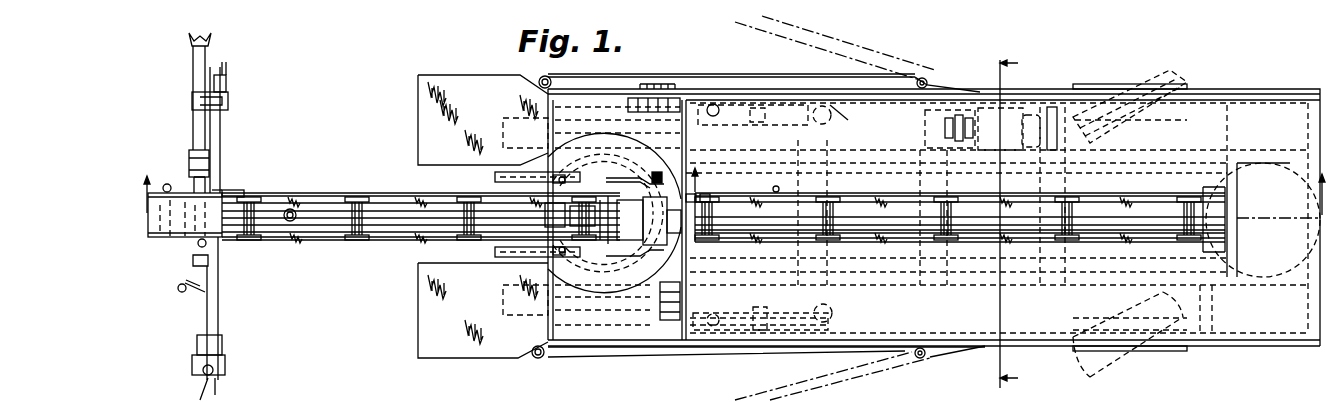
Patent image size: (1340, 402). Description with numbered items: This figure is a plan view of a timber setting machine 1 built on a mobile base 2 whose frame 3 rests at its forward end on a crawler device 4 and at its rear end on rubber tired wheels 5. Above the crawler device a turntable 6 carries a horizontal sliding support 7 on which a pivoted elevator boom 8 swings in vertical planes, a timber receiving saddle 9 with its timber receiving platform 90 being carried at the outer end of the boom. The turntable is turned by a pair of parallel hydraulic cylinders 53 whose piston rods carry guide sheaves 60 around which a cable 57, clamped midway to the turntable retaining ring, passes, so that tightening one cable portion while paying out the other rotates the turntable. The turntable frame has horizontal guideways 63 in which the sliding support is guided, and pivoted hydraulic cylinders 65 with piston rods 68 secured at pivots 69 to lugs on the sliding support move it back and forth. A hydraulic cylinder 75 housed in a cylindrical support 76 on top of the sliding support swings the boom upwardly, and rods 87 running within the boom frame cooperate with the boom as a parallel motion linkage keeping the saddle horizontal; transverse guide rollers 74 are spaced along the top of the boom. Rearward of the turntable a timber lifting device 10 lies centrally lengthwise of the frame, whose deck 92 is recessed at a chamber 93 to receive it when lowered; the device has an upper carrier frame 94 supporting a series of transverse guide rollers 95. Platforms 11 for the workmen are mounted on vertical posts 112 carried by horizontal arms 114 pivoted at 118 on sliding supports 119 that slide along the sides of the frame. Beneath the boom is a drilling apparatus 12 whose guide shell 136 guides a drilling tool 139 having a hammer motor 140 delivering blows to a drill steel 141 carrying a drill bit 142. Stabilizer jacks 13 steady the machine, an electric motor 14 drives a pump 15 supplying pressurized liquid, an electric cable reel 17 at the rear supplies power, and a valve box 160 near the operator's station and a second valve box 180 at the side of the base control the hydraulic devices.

The timber setting machine 1 is at (1240, 93).
The mobile base 2 is at (1292, 347).
The frame 3 is at (968, 318).
The crawler device 4 is at (1009, 183).
The rubber tired wheels 5 is at (595, 322).
The turntable 6 is at (630, 285).
The horizontal sliding support 7 is at (665, 255).
The elevator boom 8 is at (330, 193).
The timber receiving saddle 9 is at (178, 228).
The timber lifting device 10 is at (1105, 200).
The platforms 11 is at (418, 345).
The drilling apparatus 12 is at (208, 165).
The stabilizer jacks 13 is at (716, 352).
The electric motor 14 is at (1032, 112).
The pump 15 is at (930, 135).
The electric cable reel 17 is at (1270, 163).
The hydraulic cylinders 53 is at (745, 352).
The cable 57 is at (778, 310).
The guide sheaves 60 is at (832, 311).
The horizontal guideways 63 is at (495, 250).
The hydraulic cylinders 65 is at (605, 262).
The piston rods 68 is at (572, 262).
The pivotal connection 69 is at (560, 256).
The transverse guide rollers 74 is at (370, 194).
The hydraulic cylinder 75 is at (706, 196).
The cylindrical support 76 is at (688, 196).
The rods 87 is at (400, 230).
The timber receiving platform 90 is at (228, 192).
The timber carrying platform or deck 92 is at (848, 118).
The chamber 93 is at (776, 186).
The upper horizontal carrier frame 94 is at (1113, 242).
The transverse guide rollers 95 is at (945, 228).
The vertical posts 112 is at (535, 358).
The horizontal arms 114 is at (683, 362).
The pivotal mounting 118 is at (917, 360).
The sliding supports 119 is at (952, 358).
The guide shell 136 is at (220, 297).
The drilling tool 139 is at (183, 283).
The hammer motor 140 is at (210, 260).
The drill steel 141 is at (203, 137).
The drill bit 142 is at (213, 43).
The valve box 160 is at (668, 308).
The valve box 180 is at (673, 84).